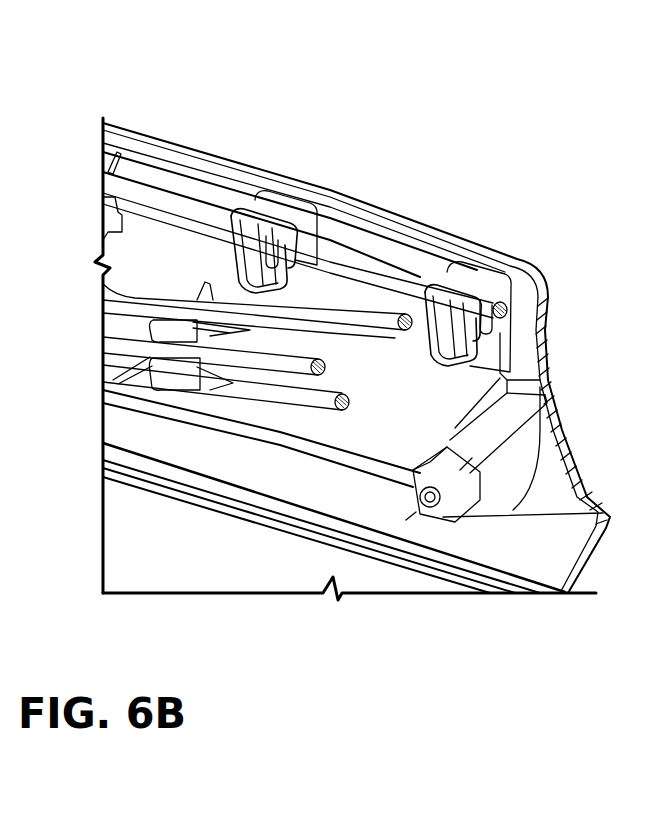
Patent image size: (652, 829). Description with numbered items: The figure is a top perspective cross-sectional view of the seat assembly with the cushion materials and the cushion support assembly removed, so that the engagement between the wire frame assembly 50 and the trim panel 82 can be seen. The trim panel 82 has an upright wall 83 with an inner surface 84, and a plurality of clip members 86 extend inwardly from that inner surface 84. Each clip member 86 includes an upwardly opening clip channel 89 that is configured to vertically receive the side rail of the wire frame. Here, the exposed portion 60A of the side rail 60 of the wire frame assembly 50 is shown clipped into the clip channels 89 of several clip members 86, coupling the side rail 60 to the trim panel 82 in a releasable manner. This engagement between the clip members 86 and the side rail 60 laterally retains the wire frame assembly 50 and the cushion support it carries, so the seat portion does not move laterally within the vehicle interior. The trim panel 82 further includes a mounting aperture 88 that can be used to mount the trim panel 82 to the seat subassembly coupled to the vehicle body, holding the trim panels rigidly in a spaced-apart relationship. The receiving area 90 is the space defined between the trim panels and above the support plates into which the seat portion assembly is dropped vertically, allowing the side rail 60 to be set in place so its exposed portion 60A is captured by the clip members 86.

The wire frame assembly 50 is at (288, 403).
The side rail 60 is at (373, 270).
The exposed portion 60A is at (340, 240).
The trim panel 82 is at (548, 260).
The upright wall 83 is at (568, 437).
The inner surface 84 is at (400, 373).
The clip member 86 is at (110, 165).
The mounting aperture 88 is at (430, 523).
The clip channel 89 is at (286, 248).
The receiving area 90 is at (443, 202).